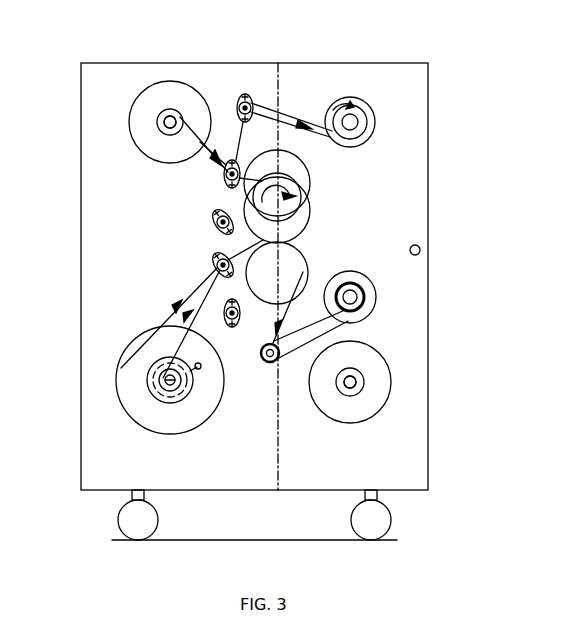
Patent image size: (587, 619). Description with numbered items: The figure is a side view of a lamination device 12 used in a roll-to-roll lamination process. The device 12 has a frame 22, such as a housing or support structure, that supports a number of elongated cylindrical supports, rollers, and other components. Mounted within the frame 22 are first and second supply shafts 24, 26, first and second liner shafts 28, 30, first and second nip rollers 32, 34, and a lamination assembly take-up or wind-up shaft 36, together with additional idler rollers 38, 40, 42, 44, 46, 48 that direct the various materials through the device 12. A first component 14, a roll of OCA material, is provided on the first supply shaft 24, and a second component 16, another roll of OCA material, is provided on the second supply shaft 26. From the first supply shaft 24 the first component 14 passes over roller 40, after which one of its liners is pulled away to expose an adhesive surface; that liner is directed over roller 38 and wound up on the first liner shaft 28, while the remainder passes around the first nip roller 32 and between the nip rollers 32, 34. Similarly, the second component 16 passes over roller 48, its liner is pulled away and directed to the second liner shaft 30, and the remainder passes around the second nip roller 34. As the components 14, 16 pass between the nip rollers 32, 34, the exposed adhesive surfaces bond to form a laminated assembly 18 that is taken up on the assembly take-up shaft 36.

The lamination device 12 is at (423, 47).
The first component 14 is at (172, 88).
The second component 16 is at (340, 410).
The laminated assembly 18 is at (196, 410).
The frame 22 is at (400, 90).
The first supply shaft 24 is at (169, 122).
The second supply shaft 26 is at (356, 383).
The first liner shaft 28 is at (353, 122).
The second liner shaft 30 is at (357, 300).
The first nip roller 32 is at (300, 215).
The second nip roller 34 is at (300, 267).
The assembly take-up shaft 36 is at (164, 381).
The roller 38 is at (247, 94).
The roller 40 is at (224, 178).
The roller 42 is at (215, 222).
The roller 44 is at (215, 264).
The roller 46 is at (232, 328).
The roller 48 is at (273, 362).